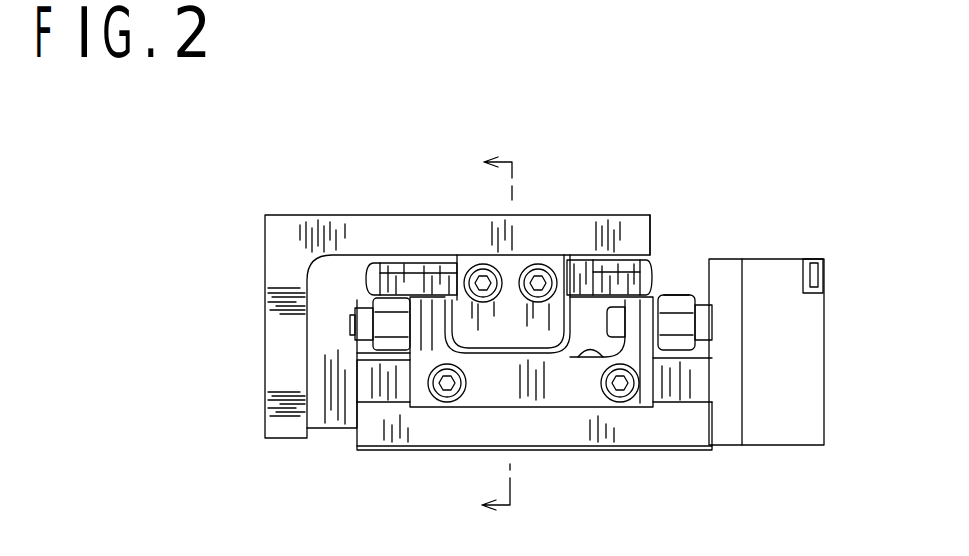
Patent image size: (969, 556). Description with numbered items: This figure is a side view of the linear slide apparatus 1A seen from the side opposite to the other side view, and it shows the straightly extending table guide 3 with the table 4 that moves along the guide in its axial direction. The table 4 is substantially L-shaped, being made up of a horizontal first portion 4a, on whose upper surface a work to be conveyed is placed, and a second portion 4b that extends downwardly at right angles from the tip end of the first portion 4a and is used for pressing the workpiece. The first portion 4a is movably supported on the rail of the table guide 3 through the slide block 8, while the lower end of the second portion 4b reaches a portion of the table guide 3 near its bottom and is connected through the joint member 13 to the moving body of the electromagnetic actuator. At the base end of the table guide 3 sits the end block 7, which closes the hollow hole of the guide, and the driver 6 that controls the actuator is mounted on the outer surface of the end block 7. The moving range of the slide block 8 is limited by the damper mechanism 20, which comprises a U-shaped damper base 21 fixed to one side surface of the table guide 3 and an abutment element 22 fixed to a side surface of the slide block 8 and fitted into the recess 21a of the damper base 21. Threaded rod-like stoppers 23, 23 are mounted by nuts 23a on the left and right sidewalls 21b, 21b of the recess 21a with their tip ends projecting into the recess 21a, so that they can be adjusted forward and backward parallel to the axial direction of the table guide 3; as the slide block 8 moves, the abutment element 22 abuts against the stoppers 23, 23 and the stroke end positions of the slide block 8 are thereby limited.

The linear slide apparatus 1A is at (540, 309).
The table guide 3 is at (639, 462).
The table 4 is at (282, 210).
The first portion 4a is at (323, 222).
The second portion 4b is at (292, 348).
The driver 6 is at (790, 382).
The end block 7 is at (727, 412).
The slide block 8 is at (587, 268).
The joint member 13 is at (344, 417).
The damper mechanism 20 is at (556, 242).
The damper base 21 is at (470, 392).
The recess 21a is at (581, 357).
The sidewalls 21b is at (430, 303).
The abutment element 22 is at (515, 272).
The stoppers 23 is at (356, 320).
The nuts 23a is at (675, 302).